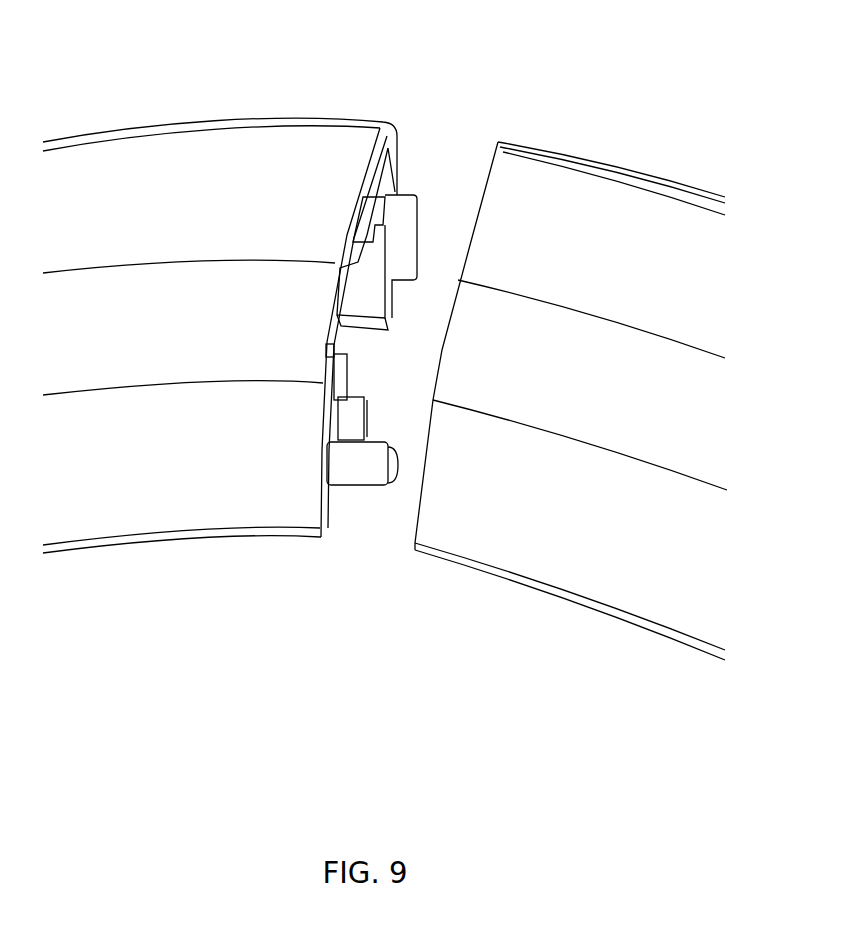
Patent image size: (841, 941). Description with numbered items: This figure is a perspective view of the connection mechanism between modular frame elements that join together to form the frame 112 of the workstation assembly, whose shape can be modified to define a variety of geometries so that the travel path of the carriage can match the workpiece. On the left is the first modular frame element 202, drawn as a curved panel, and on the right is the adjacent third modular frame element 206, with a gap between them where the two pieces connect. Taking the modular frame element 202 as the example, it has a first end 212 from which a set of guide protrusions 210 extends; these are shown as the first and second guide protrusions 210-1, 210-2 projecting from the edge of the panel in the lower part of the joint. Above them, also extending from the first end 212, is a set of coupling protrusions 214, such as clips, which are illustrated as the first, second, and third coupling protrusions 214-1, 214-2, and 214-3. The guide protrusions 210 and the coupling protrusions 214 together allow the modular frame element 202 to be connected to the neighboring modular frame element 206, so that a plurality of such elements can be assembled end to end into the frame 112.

The frame 112 is at (545, 66).
The first modular frame element 202 is at (256, 124).
The third modular frame element 206 is at (660, 177).
The set of guide protrusions 210 is at (384, 544).
The first guide protrusion 210-1 is at (335, 377).
The second guide protrusion 210-2 is at (347, 487).
The first end 212 is at (260, 563).
The set of coupling protrusions 214 is at (410, 122).
The first coupling protrusion 214-1 is at (362, 212).
The second coupling protrusion 214-2 is at (411, 199).
The third coupling protrusion 214-3 is at (350, 422).